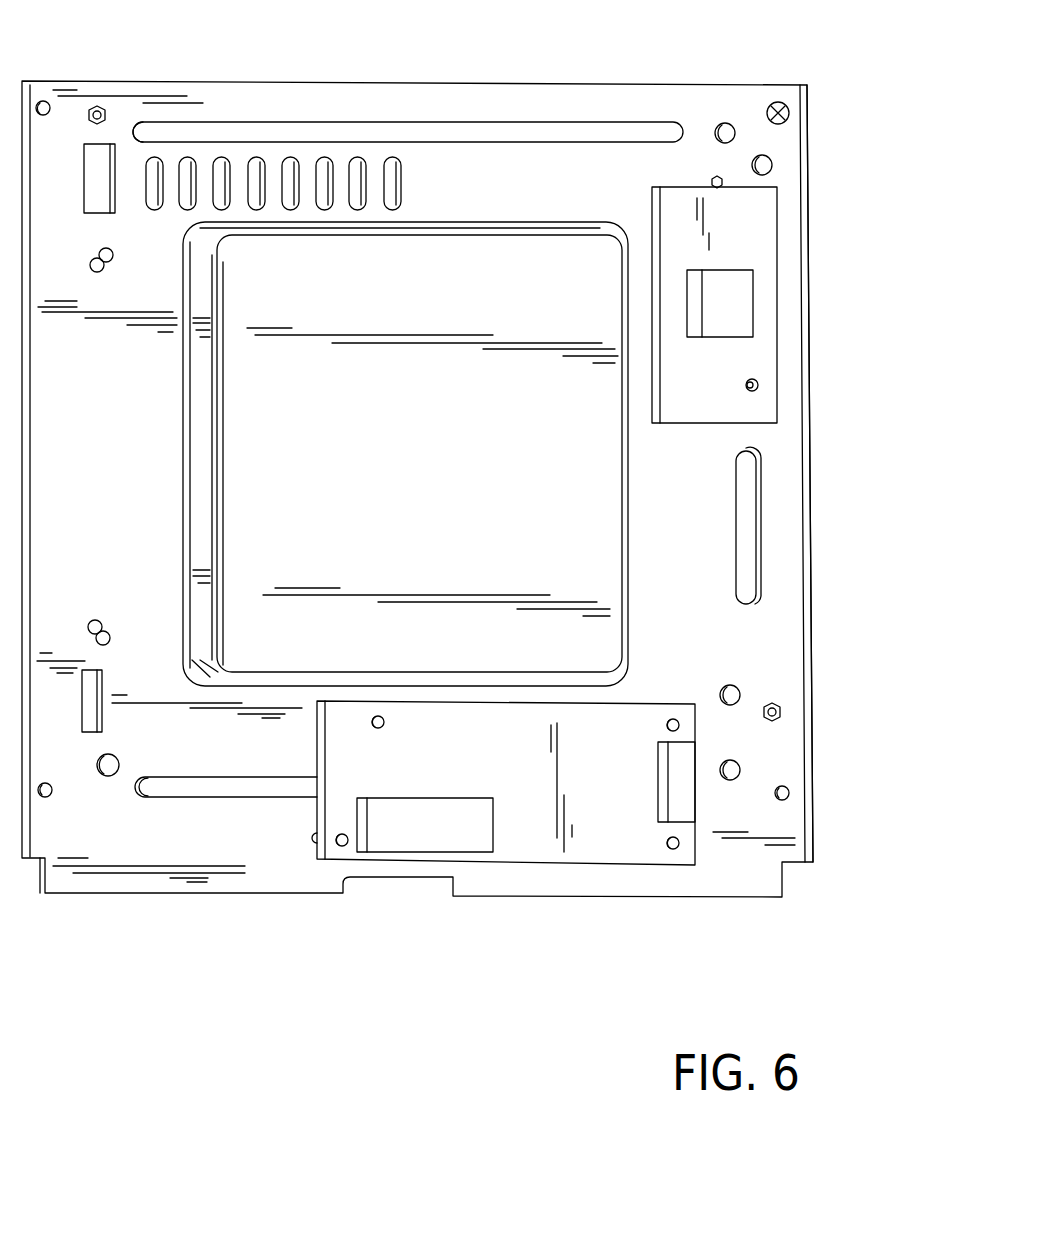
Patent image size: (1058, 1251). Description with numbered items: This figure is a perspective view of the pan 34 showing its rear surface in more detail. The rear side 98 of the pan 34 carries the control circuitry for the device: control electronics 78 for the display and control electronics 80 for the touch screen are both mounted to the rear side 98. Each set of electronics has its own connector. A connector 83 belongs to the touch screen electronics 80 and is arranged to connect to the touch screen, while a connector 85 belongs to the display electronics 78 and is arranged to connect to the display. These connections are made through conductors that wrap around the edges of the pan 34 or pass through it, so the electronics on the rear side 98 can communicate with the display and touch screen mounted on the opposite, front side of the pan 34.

The pan 34 is at (727, 862).
The control electronics 78 is at (687, 187).
The control electronics 80 is at (510, 863).
The connector 83 is at (393, 830).
The connector 85 is at (727, 310).
The rear side 98 is at (767, 665).